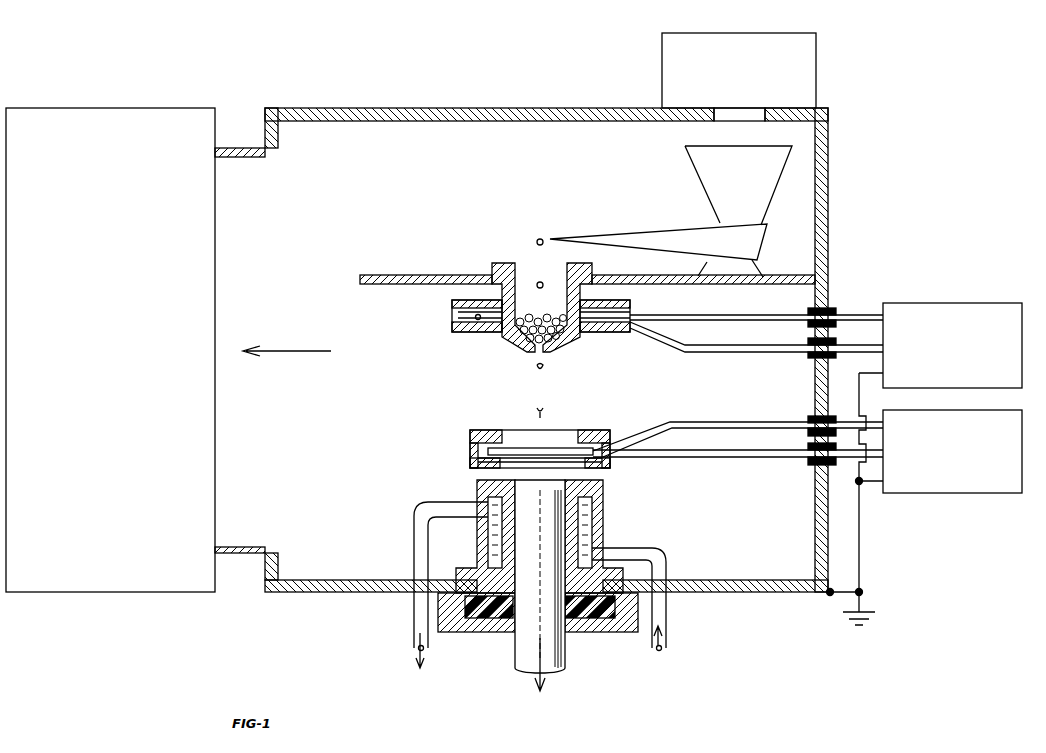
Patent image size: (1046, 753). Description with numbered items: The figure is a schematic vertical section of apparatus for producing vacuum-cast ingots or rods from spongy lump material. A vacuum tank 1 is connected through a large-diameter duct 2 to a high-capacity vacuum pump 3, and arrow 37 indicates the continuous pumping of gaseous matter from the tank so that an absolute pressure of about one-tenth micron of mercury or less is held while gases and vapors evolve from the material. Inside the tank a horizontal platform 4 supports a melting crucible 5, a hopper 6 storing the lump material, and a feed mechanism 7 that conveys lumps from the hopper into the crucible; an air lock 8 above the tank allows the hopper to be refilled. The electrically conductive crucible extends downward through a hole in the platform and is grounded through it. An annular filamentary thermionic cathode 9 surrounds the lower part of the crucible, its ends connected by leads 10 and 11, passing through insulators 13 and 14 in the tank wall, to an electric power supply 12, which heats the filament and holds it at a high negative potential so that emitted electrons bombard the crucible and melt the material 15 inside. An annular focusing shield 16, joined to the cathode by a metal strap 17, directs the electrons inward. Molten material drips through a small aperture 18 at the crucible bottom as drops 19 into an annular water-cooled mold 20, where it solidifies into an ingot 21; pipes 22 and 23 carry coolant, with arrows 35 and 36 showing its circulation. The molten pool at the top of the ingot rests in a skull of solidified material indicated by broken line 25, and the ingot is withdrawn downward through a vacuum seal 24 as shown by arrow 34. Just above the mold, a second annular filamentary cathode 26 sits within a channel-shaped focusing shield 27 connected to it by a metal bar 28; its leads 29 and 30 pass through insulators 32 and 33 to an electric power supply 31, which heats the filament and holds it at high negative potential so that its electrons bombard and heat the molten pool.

The vacuum tank 1 is at (452, 113).
The duct 2 is at (239, 150).
The vacuum pump 3 is at (191, 110).
The horizontal platform 4 is at (419, 275).
The melting crucible 5 is at (499, 265).
The hopper 6 is at (700, 181).
The feed mechanism 7 is at (607, 233).
The air lock 8 is at (733, 35).
The filamentary thermionic cathode 9 is at (475, 317).
The lead 10 is at (712, 312).
The lead 11 is at (742, 349).
The electric power supply 12 is at (944, 304).
The insulator 13 is at (830, 309).
The insulator 14 is at (806, 352).
The material 15 is at (540, 318).
The annular focusing shield 16 is at (467, 333).
The metal block or strap 17 is at (456, 328).
The aperture 18 is at (528, 353).
The drops of molten material 19 is at (551, 405).
The water-cooled mold 20 is at (600, 503).
The ingot 21 is at (516, 646).
The pipe 22 is at (644, 549).
The pipe 23 is at (431, 503).
The vacuum seal 24 is at (495, 622).
The broken line 25 is at (520, 496).
The filamentary thermionic cathode 26 is at (515, 448).
The annular focusing shield 27 is at (470, 443).
The metal strap or bar 28 is at (478, 462).
The lead 29 is at (702, 424).
The lead 30 is at (728, 455).
The electric power supply 31 is at (917, 494).
The insulator 32 is at (810, 416).
The insulator 33 is at (808, 466).
The arrow 34 is at (536, 680).
The arrow 35 is at (656, 652).
The arrow 36 is at (416, 655).
The arrow 37 is at (319, 351).